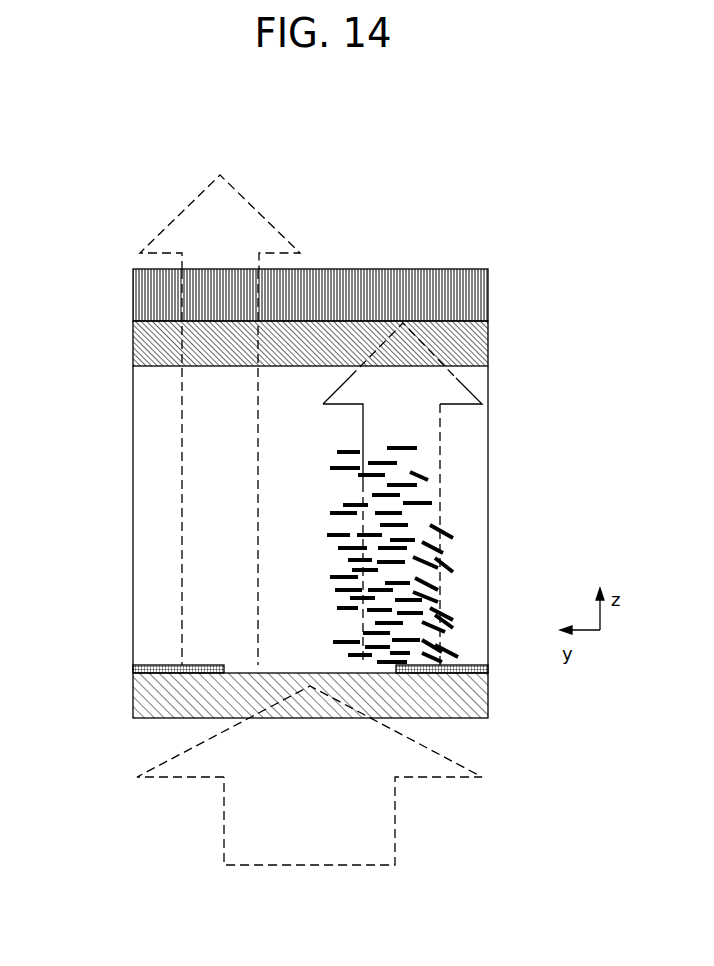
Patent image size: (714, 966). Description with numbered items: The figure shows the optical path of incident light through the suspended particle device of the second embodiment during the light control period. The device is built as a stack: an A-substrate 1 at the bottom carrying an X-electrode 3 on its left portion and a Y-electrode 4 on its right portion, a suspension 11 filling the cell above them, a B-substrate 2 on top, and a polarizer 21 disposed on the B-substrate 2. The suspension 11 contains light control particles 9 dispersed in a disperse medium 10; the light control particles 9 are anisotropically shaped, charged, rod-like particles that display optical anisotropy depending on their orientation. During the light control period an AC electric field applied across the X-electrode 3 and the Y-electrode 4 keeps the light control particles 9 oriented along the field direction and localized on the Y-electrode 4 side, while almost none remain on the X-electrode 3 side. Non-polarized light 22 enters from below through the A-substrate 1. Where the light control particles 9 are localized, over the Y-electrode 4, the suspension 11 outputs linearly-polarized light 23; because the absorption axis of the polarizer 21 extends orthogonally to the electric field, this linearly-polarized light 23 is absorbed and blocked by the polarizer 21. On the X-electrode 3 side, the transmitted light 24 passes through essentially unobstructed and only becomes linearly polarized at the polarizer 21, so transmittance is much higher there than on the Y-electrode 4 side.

The A-substrate 1 is at (133, 701).
The B-substrate 2 is at (133, 345).
The X-electrode 3 is at (133, 667).
The Y-electrode 4 is at (488, 668).
The light control particles 9 is at (420, 502).
The disperse medium 10 is at (467, 512).
The suspension 11 is at (378, 515).
The polarizer 21 is at (133, 297).
The non-polarized light 22 is at (347, 865).
The linearly-polarized light 23 is at (457, 382).
The light transmitted on the X-electrode side 24 is at (220, 175).